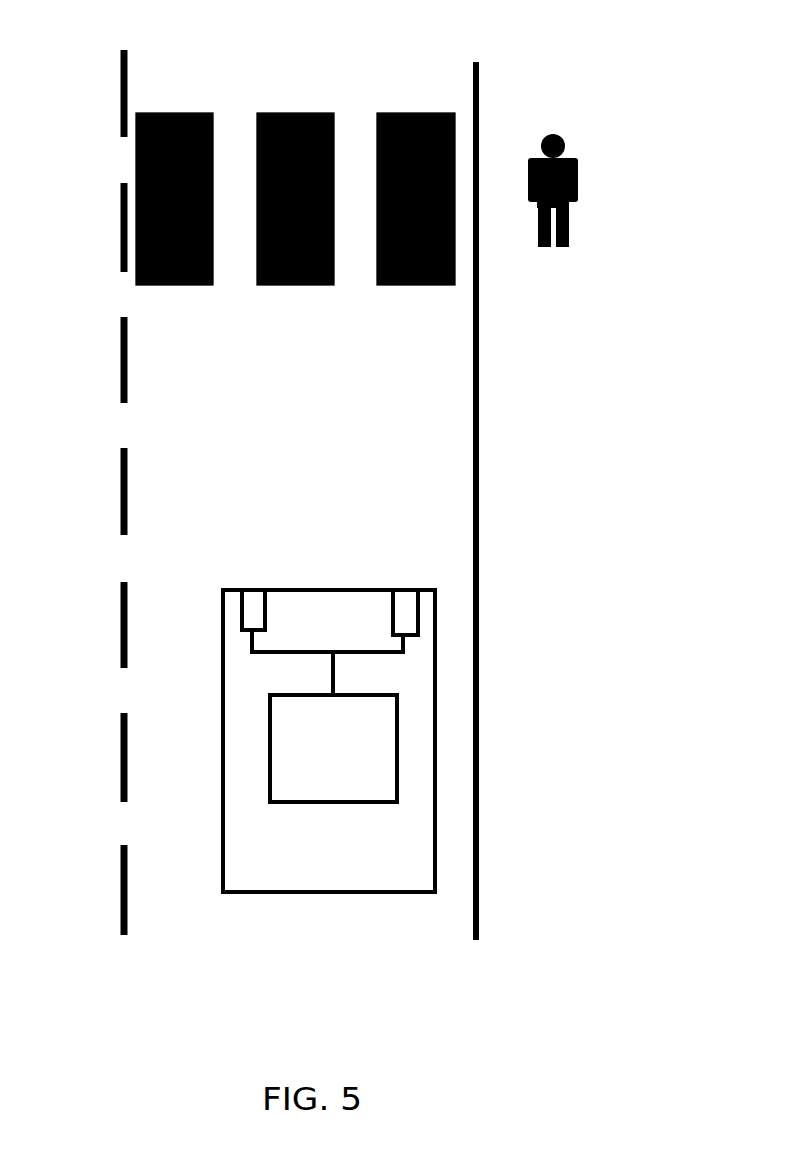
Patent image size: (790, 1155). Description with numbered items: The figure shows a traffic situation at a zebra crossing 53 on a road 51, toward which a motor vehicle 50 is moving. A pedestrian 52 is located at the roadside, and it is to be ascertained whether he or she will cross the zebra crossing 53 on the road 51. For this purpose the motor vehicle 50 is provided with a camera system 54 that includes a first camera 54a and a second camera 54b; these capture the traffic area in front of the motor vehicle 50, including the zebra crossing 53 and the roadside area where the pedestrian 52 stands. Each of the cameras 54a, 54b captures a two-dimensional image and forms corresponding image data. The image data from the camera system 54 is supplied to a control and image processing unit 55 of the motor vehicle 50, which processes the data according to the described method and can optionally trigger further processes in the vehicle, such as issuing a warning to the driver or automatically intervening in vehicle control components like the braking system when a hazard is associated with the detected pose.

The motor vehicle 50 is at (435, 802).
The road 51 is at (262, 928).
The pedestrian 52 is at (622, 155).
The zebra crossing 53 is at (293, 63).
The camera system 54 is at (320, 610).
The first camera 54a is at (242, 612).
The second camera 54b is at (418, 623).
The control and image processing unit 55 is at (397, 738).